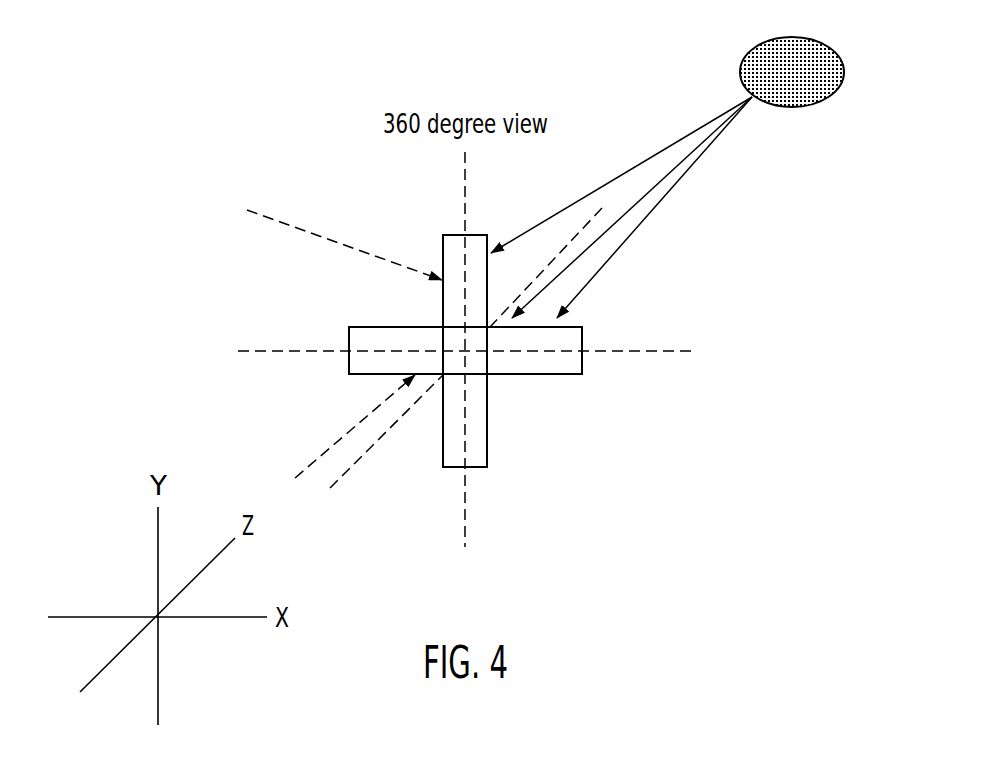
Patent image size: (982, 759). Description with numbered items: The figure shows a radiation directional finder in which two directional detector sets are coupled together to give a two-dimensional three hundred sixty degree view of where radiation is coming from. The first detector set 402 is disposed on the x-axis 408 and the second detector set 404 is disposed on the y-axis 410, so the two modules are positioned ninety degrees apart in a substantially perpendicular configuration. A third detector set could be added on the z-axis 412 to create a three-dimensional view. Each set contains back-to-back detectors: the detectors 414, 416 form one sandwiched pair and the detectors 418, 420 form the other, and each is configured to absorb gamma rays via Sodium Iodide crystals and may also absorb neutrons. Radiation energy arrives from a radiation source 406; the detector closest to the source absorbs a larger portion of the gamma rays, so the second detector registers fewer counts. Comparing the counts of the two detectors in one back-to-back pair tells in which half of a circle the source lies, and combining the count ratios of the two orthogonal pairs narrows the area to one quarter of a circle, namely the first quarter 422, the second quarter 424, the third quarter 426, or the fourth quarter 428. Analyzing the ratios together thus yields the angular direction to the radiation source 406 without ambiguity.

The first detector set 402 is at (465, 232).
The second detector set 404 is at (348, 352).
The radiation source 406 is at (825, 104).
The x-axis 408 is at (672, 352).
The y-axis 410 is at (465, 515).
The z-axis 412 is at (330, 492).
The detector 414 is at (452, 293).
The detector 416 is at (478, 285).
The detector 418 is at (365, 328).
The detector 420 is at (535, 362).
The first quarter 422 is at (517, 272).
The second quarter 424 is at (505, 415).
The third quarter 426 is at (347, 402).
The fourth quarter 428 is at (385, 283).